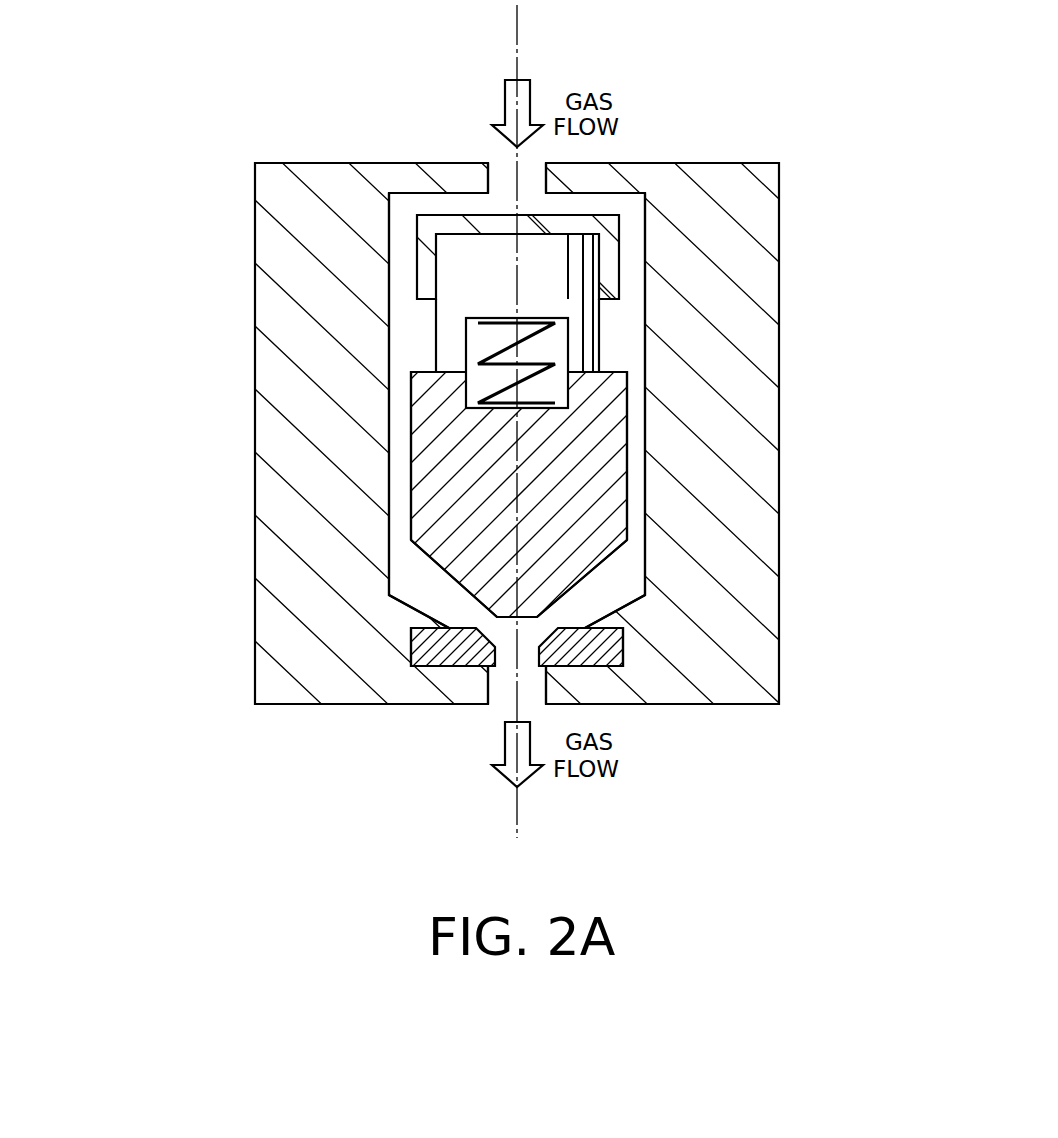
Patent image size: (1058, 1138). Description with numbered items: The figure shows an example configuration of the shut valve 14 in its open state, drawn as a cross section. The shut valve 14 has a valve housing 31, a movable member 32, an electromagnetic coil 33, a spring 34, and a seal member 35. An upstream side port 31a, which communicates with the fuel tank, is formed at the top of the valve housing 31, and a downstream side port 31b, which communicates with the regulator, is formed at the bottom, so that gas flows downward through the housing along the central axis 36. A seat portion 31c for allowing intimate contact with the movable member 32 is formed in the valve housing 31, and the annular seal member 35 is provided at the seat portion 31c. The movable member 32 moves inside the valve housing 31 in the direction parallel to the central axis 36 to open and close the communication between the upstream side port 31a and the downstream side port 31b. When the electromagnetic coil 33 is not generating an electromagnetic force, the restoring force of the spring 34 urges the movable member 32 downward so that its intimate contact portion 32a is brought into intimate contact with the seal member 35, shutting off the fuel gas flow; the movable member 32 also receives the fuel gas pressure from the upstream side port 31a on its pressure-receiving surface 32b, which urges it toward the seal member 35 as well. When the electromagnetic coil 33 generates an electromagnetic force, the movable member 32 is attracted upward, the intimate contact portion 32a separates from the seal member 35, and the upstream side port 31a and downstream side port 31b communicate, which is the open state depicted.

The shut valve 14 is at (225, 558).
The valve housing 31 is at (750, 390).
The upstream side port 31a is at (507, 168).
The downstream side port 31b is at (502, 698).
The seat portion 31c is at (423, 595).
The movable member 32 is at (613, 447).
The intimate contact portion 32a is at (545, 604).
The pressure-receiving surface 32b is at (612, 368).
The electromagnetic coil 33 is at (598, 318).
The spring 34 is at (493, 353).
The seal member 35 is at (613, 652).
The central axis 36 is at (517, 47).